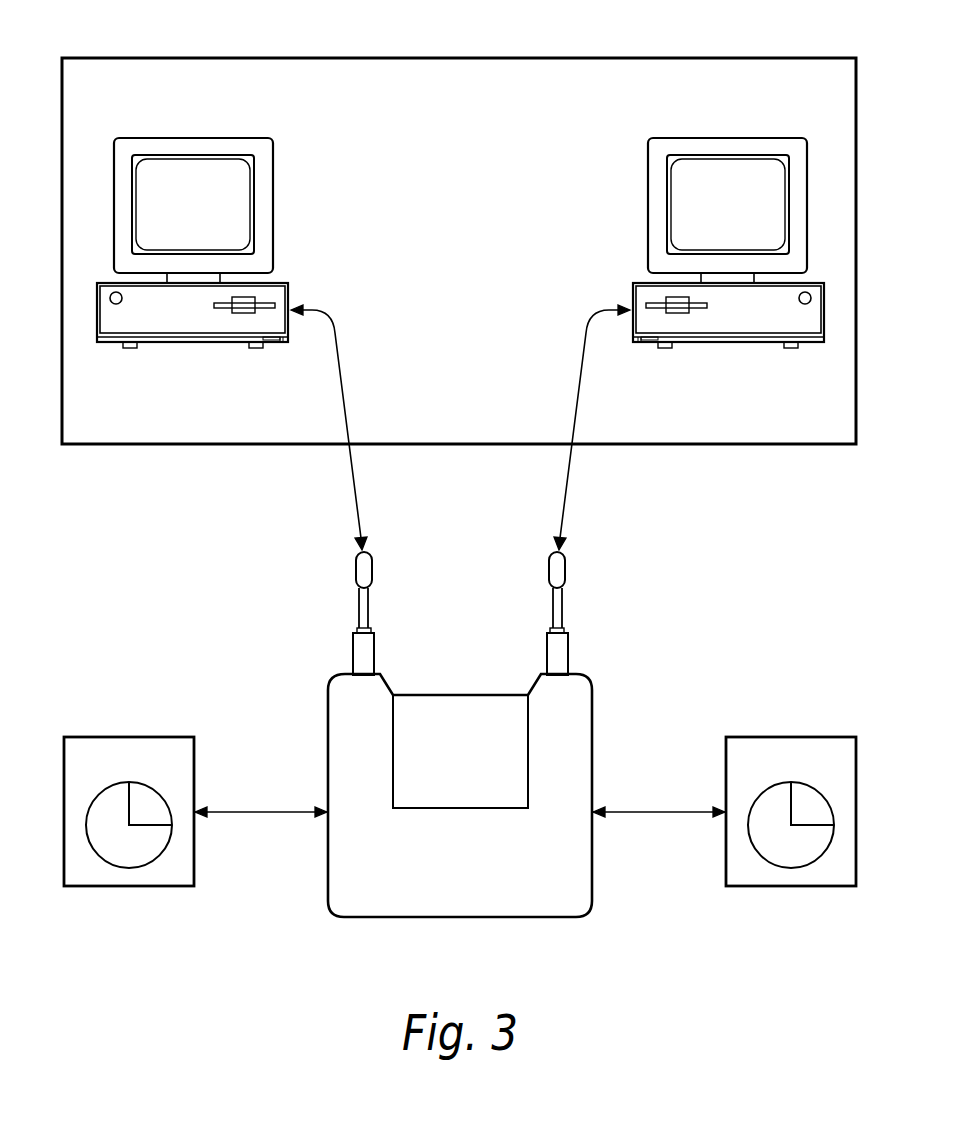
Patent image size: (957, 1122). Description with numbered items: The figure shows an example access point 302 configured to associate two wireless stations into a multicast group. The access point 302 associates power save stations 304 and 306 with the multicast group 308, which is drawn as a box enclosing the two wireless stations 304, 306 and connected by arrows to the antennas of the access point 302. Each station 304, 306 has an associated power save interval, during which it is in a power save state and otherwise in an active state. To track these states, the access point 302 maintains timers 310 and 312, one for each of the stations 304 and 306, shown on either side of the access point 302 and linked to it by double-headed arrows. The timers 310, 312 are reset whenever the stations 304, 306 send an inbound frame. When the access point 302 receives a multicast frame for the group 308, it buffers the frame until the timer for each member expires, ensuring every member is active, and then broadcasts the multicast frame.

The access point 302 is at (355, 918).
The power save station 304 is at (178, 138).
The power save station 306 is at (742, 138).
The multicast group 308 is at (290, 58).
The timer 310 is at (133, 737).
The timer 312 is at (788, 737).